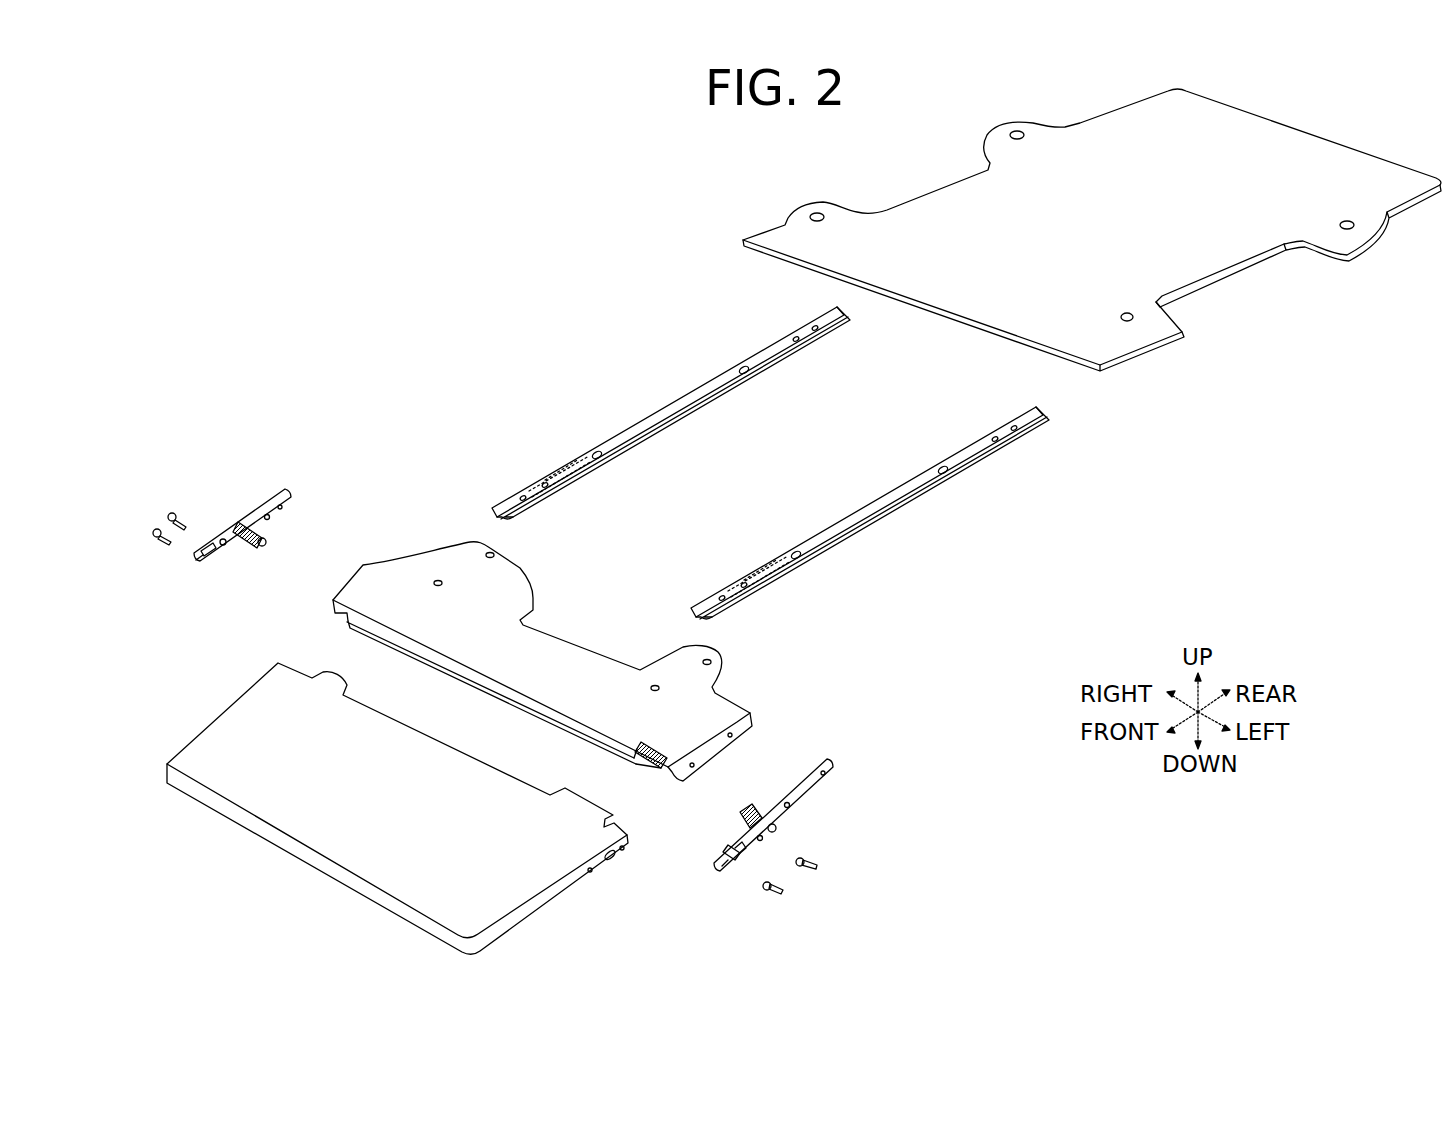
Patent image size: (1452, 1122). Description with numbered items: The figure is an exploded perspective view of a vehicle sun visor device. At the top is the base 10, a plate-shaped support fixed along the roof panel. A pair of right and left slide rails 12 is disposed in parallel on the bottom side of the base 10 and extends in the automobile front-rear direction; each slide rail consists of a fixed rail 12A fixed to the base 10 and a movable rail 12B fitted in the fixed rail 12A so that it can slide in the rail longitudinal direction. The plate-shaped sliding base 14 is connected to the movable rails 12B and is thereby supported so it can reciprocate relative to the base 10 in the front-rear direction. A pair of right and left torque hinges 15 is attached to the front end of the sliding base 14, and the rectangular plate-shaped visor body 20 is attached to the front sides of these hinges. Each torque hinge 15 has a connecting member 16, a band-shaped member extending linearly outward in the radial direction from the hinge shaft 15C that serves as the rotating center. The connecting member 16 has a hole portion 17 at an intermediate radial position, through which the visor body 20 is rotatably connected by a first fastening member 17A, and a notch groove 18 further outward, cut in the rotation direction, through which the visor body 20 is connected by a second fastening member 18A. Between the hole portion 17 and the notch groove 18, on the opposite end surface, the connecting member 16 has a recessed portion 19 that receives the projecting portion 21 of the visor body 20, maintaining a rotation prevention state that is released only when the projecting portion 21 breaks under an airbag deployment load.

The base 10 is at (957, 212).
The slide rails 12 is at (770, 482).
The fixed rails 12A is at (678, 412).
The movable rails 12B is at (718, 504).
The sliding base 14 is at (550, 663).
The torque hinge 15 is at (235, 512).
The hinge shaft 15C is at (267, 540).
The connecting member 16 is at (217, 553).
The hole portion 17 is at (227, 545).
The first fastening member 17A is at (178, 513).
The notch groove 18 is at (203, 563).
The second fastening member 18A is at (157, 537).
The recessed portion 19 is at (737, 850).
The visor body 20 is at (403, 808).
The projecting portion 21 is at (620, 853).